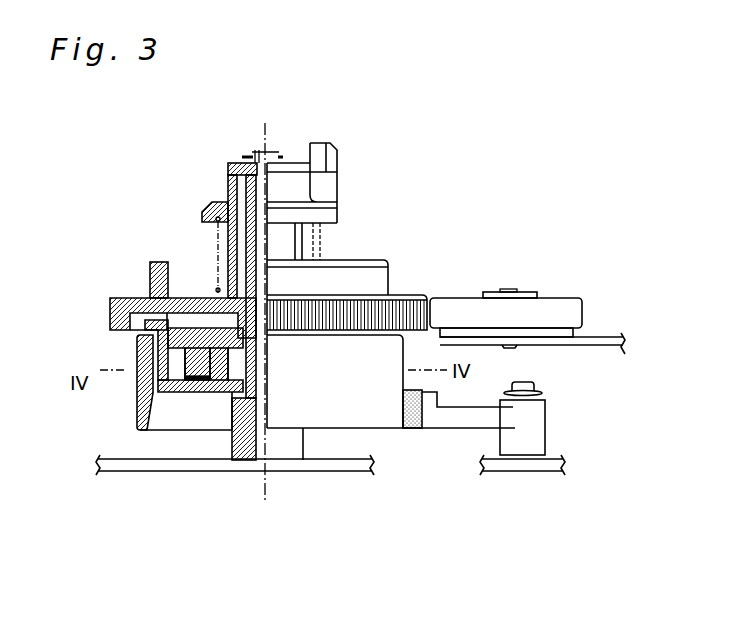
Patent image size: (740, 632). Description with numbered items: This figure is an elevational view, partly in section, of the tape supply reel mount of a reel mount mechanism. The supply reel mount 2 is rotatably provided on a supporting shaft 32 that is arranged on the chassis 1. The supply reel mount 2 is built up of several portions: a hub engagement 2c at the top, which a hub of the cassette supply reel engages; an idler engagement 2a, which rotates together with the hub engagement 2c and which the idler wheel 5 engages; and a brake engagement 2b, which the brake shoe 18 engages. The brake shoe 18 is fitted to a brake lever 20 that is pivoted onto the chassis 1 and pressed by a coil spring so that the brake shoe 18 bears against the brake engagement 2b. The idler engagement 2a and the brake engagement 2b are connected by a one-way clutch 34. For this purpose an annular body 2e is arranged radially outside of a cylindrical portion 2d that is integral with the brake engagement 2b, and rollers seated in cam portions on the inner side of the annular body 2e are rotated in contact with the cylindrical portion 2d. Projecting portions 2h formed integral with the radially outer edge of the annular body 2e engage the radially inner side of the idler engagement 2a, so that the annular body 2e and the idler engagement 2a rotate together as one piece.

The chassis 1 is at (332, 465).
The supply reel mount 2 is at (387, 263).
The idler engagement 2a is at (117, 310).
The brake engagement 2b is at (142, 393).
The hub engagement 2c is at (228, 192).
The cylindrical portion 2d is at (215, 365).
The annular body 2e is at (140, 393).
The projecting portions 2h is at (145, 328).
The idler wheel 5 is at (523, 305).
The brake shoe 18 is at (410, 430).
The brake lever 20 is at (467, 413).
The supporting shaft 32 is at (264, 445).
The one-way clutch 34 is at (197, 365).